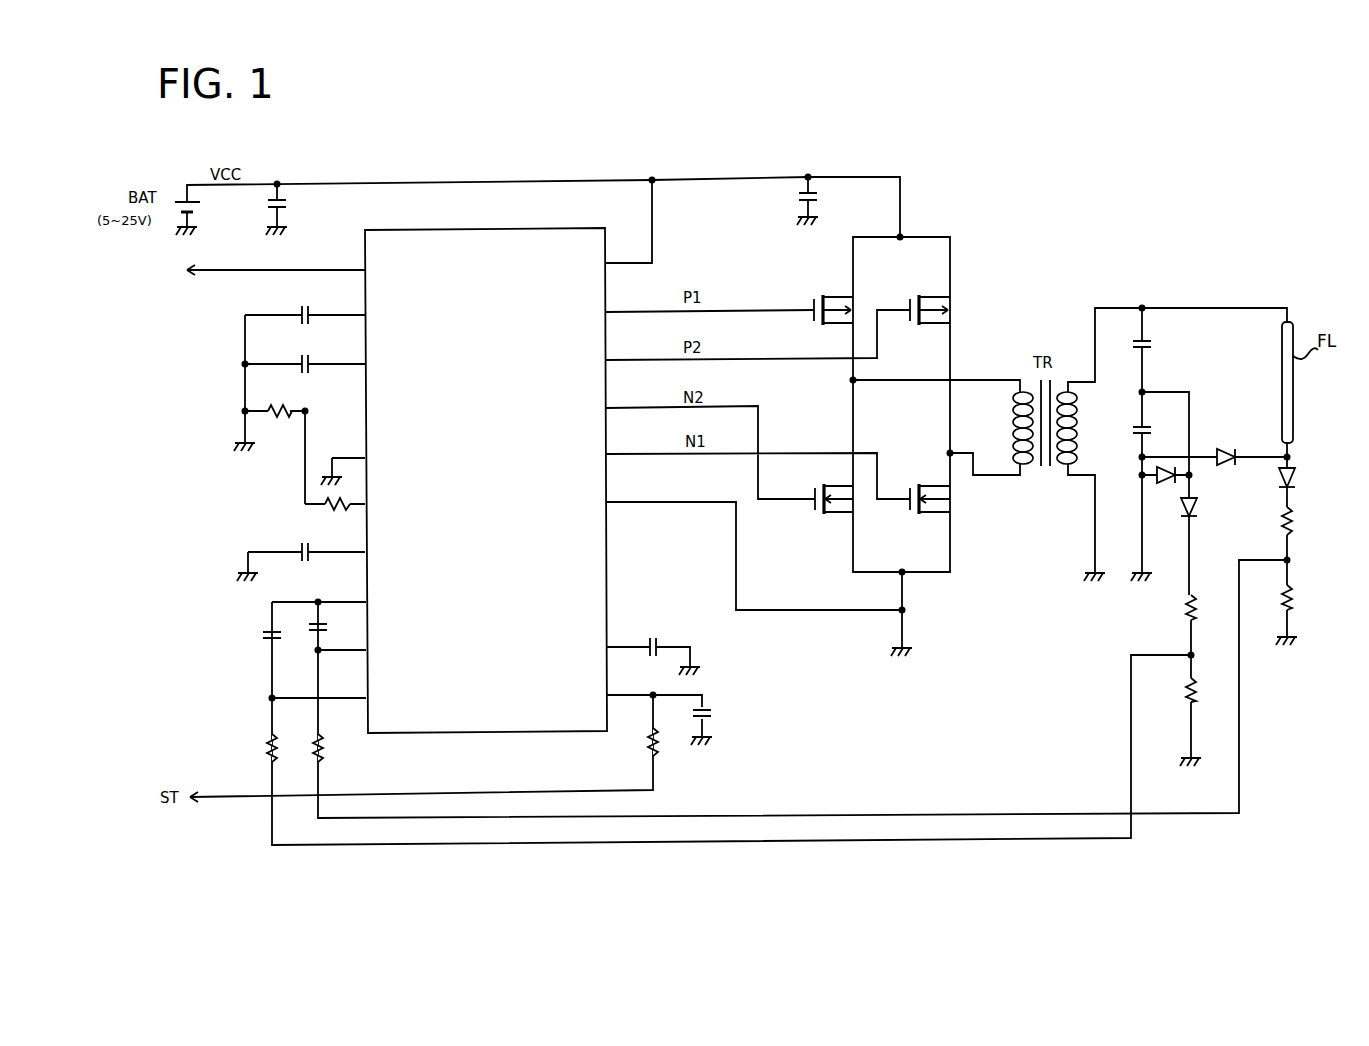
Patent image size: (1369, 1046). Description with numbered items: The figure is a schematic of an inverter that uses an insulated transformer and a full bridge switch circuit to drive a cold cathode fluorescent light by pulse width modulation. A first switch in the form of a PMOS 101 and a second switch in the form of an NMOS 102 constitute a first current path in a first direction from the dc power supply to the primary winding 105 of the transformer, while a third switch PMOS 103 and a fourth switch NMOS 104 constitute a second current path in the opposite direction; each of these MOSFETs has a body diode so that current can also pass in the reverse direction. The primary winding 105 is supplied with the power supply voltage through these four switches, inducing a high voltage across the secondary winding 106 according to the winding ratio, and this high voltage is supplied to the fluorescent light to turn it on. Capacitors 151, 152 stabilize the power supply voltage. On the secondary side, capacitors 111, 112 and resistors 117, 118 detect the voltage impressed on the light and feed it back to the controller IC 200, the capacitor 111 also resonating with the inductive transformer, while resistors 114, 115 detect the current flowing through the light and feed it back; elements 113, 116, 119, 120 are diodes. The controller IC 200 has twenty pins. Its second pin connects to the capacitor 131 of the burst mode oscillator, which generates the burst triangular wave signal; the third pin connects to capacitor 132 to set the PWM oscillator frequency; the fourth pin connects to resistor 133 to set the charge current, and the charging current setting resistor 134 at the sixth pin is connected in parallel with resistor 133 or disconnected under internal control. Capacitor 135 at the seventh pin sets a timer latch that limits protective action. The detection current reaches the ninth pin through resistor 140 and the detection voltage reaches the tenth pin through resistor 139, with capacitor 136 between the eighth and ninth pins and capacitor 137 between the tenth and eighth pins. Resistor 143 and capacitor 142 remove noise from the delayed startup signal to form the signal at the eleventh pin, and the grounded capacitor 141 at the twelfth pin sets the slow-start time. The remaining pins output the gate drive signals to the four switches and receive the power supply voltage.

The PMOS 101 is at (833, 294).
The NMOS 102 is at (930, 516).
The PMOS 103 is at (930, 294).
The NMOS 104 is at (834, 516).
The primary winding 105 is at (1005, 428).
The secondary winding 106 is at (1085, 428).
The capacitor 111 is at (1160, 343).
The capacitor 112 is at (1155, 419).
The diode 113 is at (1304, 477).
The resistor 114 is at (1305, 521).
The resistor 115 is at (1305, 597).
The diode 116 is at (1207, 507).
The resistor 117 is at (1210, 607).
The resistor 118 is at (1210, 690).
The diode 119 is at (1229, 445).
The diode 120 is at (1164, 487).
The capacitor 131 is at (306, 304).
The capacitor 132 is at (307, 353).
The resistor 133 is at (279, 401).
The charging current setting resistor 134 is at (343, 517).
The capacitor 135 is at (307, 539).
The capacitor 136 is at (334, 625).
The capacitor 137 is at (254, 637).
The resistor 139 is at (289, 752).
The resistor 140 is at (338, 748).
The capacitor 141 is at (654, 634).
The capacitor 142 is at (719, 717).
The resistor 143 is at (635, 742).
The capacitor 151 is at (296, 209).
The capacitor 152 is at (826, 201).
The controller IC 200 is at (452, 229).